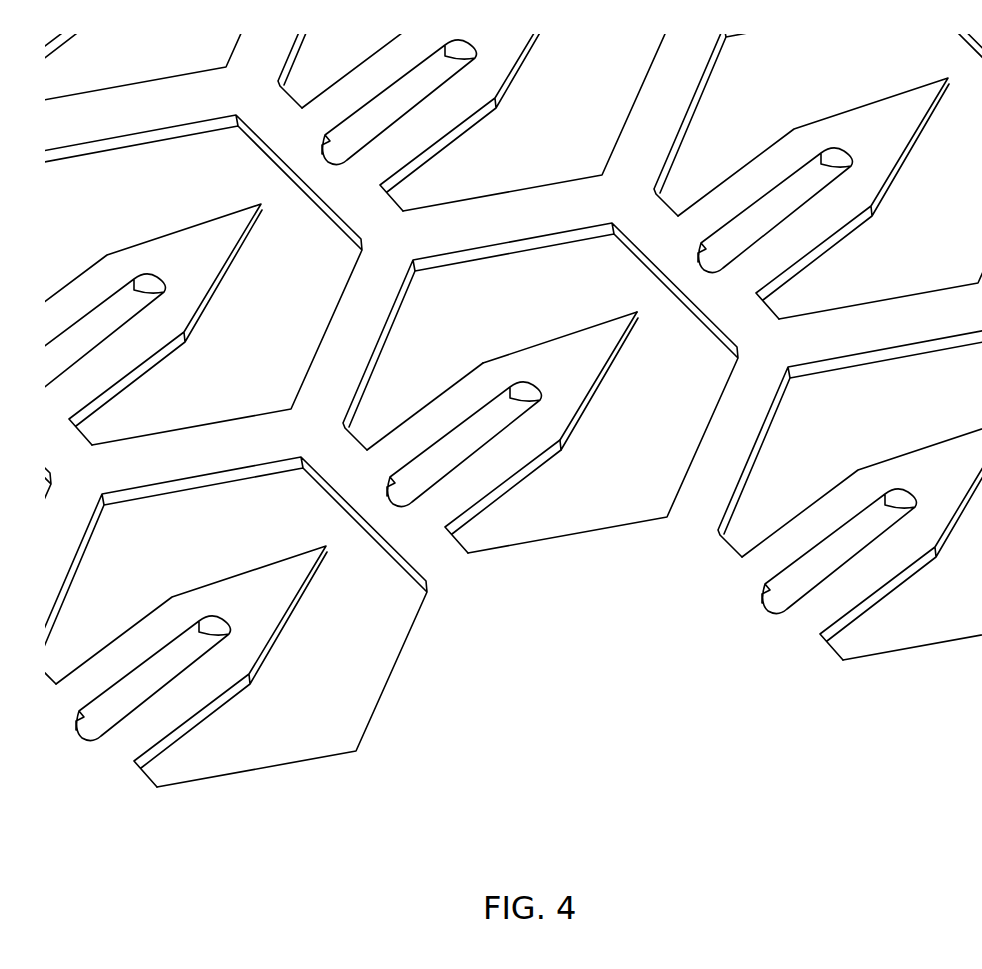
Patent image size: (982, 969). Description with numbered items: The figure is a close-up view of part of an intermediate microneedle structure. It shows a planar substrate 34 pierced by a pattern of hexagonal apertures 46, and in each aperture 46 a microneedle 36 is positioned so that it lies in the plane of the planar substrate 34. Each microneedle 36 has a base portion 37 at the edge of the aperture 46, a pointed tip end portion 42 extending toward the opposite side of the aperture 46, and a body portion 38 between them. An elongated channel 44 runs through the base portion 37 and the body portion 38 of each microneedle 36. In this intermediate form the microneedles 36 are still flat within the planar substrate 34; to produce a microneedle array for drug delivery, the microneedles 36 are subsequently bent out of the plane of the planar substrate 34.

The planar substrate 34 is at (342, 337).
The microneedle 36 is at (557, 407).
The base portion 37 is at (394, 454).
The body portion 38 is at (515, 449).
The tip end portion 42 is at (592, 365).
The elongated channel 44 is at (475, 441).
The aperture 46 is at (471, 497).